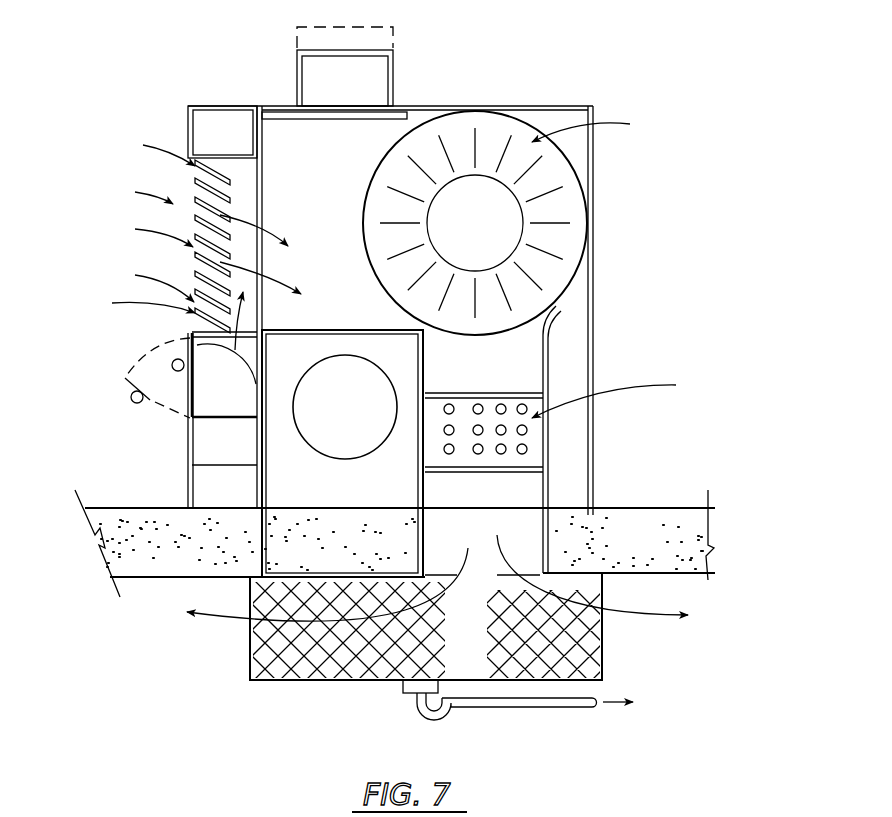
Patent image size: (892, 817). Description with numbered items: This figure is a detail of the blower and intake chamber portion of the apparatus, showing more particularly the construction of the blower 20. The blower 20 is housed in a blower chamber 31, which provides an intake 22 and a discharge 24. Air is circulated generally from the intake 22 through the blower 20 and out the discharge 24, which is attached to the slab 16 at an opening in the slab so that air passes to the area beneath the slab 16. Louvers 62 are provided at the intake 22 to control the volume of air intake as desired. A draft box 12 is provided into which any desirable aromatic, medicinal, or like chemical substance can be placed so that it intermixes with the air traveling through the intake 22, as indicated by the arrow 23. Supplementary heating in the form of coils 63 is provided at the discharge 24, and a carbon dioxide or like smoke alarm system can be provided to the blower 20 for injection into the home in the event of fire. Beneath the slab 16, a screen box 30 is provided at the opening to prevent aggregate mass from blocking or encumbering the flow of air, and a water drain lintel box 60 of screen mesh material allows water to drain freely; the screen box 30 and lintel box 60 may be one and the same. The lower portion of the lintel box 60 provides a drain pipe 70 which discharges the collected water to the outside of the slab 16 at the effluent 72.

The blower 20 is at (505, 80).
The intake 22 is at (150, 180).
The louvers 62 is at (196, 284).
The arrow 23 is at (262, 365).
The draft box 12 is at (154, 410).
The slab 16 is at (157, 568).
The screen box 30 is at (283, 672).
The lintel box 60 is at (421, 650).
The discharge 24 is at (488, 558).
The drain pipe 70 is at (445, 718).
The effluent 72 is at (590, 708).
The blower chamber 31 is at (593, 282).
The coils 63 is at (526, 430).